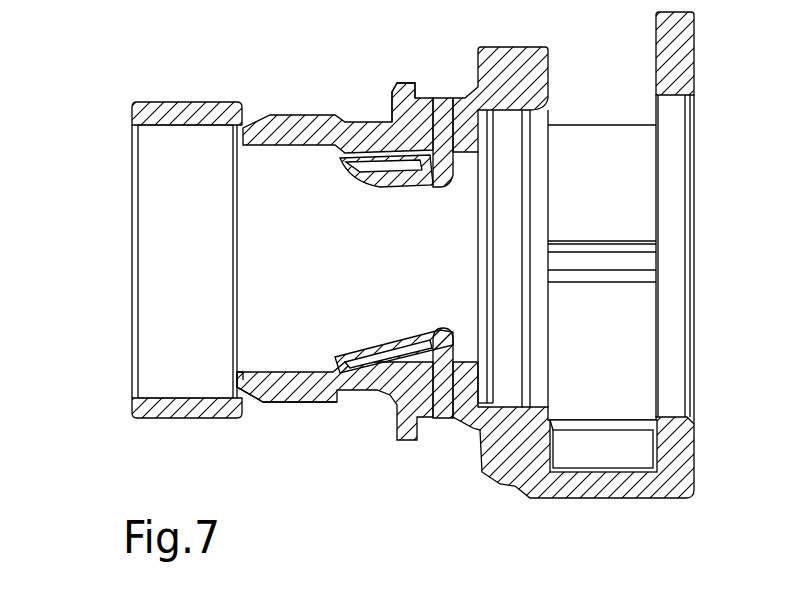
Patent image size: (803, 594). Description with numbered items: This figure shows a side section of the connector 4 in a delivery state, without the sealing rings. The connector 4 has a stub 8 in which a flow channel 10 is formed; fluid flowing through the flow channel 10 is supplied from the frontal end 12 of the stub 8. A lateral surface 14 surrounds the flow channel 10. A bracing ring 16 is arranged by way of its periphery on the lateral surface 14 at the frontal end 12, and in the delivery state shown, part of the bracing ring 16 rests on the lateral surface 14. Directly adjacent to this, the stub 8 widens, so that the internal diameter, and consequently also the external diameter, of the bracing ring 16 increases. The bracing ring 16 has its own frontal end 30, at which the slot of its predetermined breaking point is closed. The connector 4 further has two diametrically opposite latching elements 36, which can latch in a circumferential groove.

The connector 4 is at (665, 485).
The stub 8 is at (317, 392).
The flow channel 10 is at (268, 266).
The frontal end 12 is at (226, 380).
The lateral surface 14 is at (274, 418).
The bracing ring 16 is at (184, 420).
The frontal end 30 is at (120, 118).
The latching element 36 is at (407, 87).